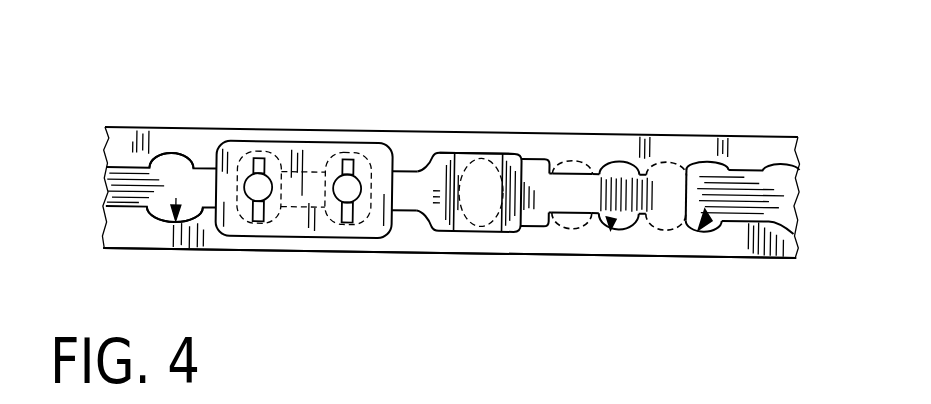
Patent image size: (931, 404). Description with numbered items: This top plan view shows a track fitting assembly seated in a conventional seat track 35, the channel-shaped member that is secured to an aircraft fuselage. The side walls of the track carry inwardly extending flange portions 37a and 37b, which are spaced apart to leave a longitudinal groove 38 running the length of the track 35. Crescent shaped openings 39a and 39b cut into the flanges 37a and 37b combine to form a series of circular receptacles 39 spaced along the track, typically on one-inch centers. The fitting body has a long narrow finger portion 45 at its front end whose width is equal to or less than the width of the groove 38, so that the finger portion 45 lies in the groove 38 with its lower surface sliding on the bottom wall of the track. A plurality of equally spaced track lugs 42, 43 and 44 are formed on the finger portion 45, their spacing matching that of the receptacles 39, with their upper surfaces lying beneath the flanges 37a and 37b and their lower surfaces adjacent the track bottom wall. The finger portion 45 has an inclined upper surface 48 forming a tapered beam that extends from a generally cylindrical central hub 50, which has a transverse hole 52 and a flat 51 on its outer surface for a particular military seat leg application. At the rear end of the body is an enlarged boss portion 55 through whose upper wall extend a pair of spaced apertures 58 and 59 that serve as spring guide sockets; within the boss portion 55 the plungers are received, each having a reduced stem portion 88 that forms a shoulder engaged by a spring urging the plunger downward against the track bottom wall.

The seat track 35 is at (213, 254).
The flange portion 37a is at (755, 262).
The flange portion 37b is at (811, 121).
The groove 38 is at (126, 186).
The circular receptacle 39 is at (210, 232).
The crescent shaped opening 39a is at (150, 238).
The crescent shaped opening 39b is at (172, 153).
The track lug 42 is at (683, 152).
The track lug 43 is at (572, 158).
The track lug 44 is at (485, 157).
The finger portion 45 is at (549, 187).
The inclined upper surface 48 is at (638, 143).
The central hub 50 is at (452, 232).
The flat 51 is at (515, 232).
The hole 52 is at (485, 232).
The boss portion 55 is at (300, 240).
The aperture 58 is at (278, 158).
The aperture 59 is at (367, 167).
The stem portion 88 is at (254, 180).